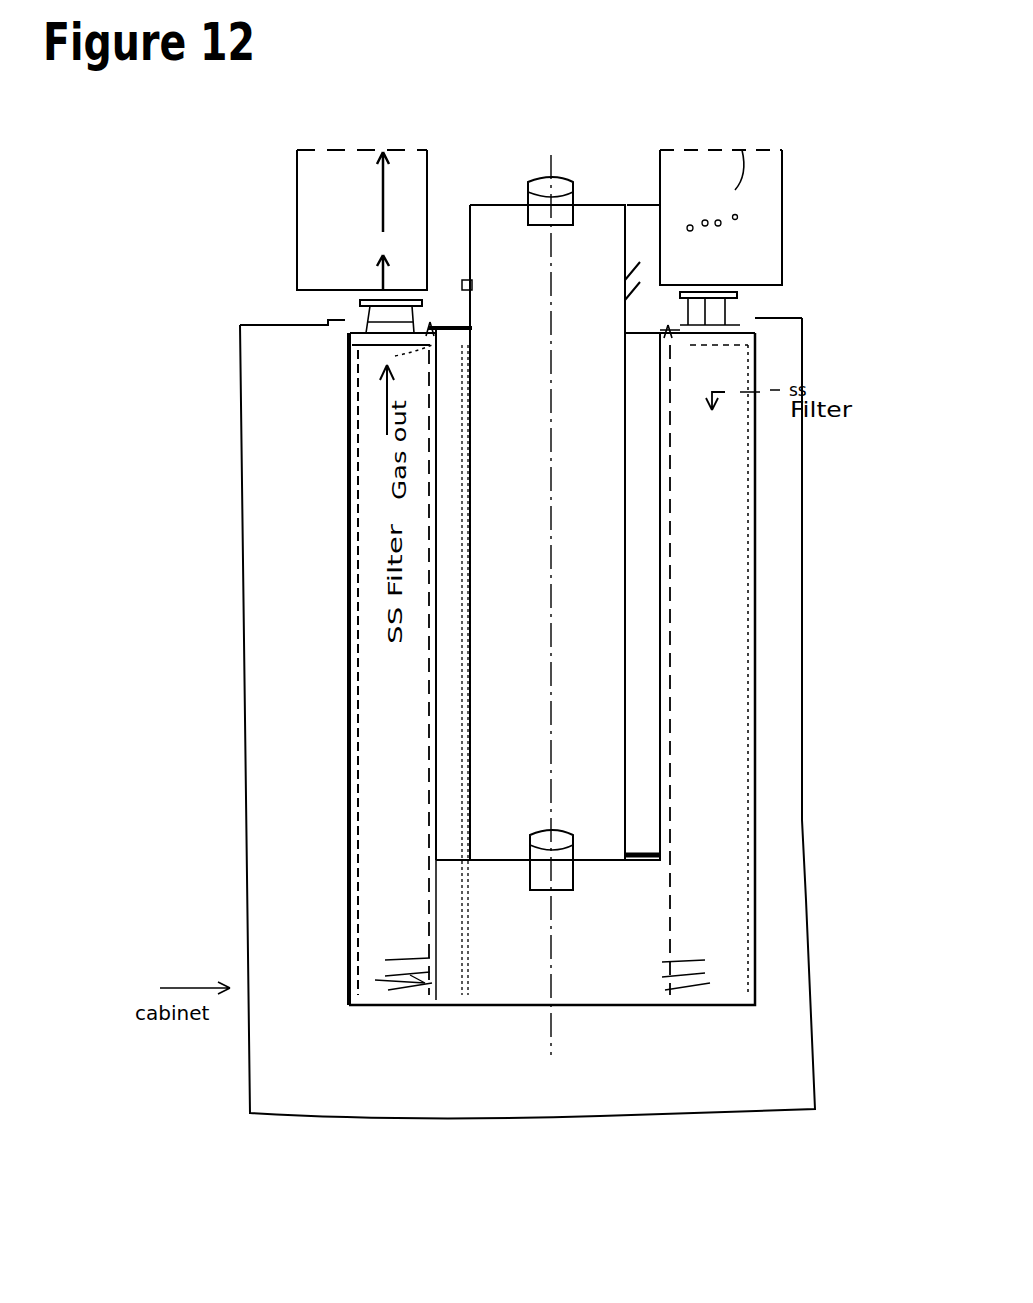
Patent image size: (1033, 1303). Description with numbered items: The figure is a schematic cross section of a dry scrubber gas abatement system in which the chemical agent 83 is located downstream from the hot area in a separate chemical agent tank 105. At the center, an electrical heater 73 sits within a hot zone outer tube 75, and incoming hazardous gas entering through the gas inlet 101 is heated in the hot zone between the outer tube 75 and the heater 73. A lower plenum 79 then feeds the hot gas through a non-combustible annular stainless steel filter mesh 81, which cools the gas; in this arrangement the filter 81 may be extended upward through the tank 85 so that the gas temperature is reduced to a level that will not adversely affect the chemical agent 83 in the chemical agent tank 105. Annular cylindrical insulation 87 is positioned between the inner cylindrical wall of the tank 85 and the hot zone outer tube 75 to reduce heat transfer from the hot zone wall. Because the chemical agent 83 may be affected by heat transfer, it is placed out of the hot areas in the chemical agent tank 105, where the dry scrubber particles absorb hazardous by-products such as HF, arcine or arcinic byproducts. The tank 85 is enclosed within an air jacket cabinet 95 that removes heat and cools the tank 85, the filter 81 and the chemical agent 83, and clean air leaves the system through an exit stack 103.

The electrical heater 73 is at (565, 190).
The hot zone outer tube 75 is at (487, 205).
The lower plenum 79 is at (515, 1010).
The stainless steel filter mesh 81 is at (355, 965).
The chemical agent particles 83 is at (742, 150).
The tank 85 is at (350, 655).
The annular cylindrical insulation 87 is at (640, 870).
The air jacket cabinet 95 is at (240, 515).
The gas inlet 101 is at (360, 304).
The exit stack 103 is at (640, 238).
The chemical agent tank 105 is at (297, 200).